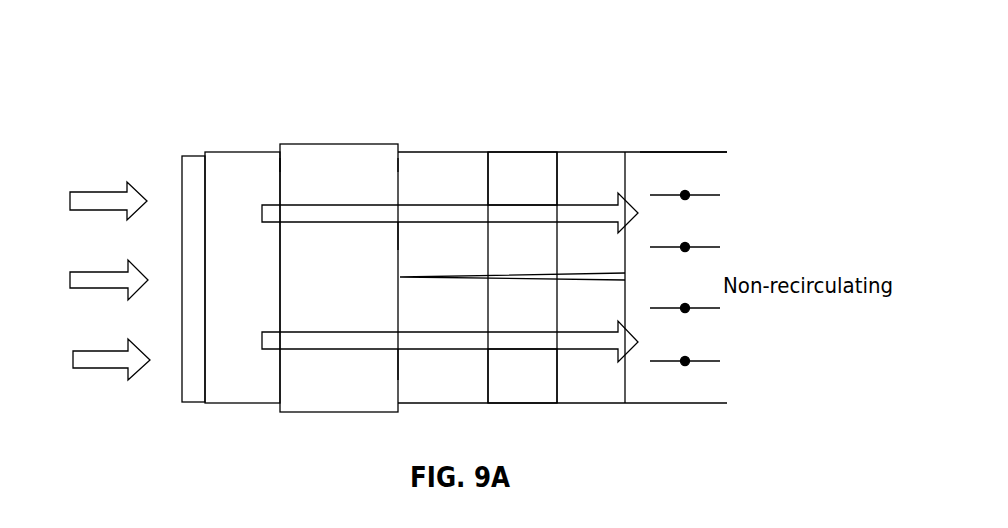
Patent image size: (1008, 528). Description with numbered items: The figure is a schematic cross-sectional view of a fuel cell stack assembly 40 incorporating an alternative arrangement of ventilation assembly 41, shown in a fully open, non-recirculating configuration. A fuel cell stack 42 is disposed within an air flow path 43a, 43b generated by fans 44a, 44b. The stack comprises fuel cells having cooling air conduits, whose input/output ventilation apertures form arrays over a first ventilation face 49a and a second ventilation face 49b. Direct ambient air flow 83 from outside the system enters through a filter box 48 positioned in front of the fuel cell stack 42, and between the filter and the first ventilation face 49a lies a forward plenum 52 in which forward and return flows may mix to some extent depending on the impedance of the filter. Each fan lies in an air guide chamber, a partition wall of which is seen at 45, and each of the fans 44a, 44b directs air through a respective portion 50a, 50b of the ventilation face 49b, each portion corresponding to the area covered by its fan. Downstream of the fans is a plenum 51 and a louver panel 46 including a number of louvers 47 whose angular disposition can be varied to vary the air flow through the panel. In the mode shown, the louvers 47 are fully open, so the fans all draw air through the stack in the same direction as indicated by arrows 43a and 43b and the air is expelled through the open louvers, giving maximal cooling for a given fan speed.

The fuel cell stack assembly 40 is at (123, 97).
The ventilation assembly 41 is at (592, 129).
The fuel cell stack 42 is at (330, 163).
The air flow path 43a is at (452, 214).
The air flow path 43b is at (452, 343).
The upper fan 44a is at (525, 180).
The lower fan 44b is at (528, 385).
The partition wall 45 is at (452, 280).
The louver panel 46 is at (713, 152).
The louvers 47 is at (708, 241).
The filter box 48 is at (192, 156).
The first ventilation face 49a is at (280, 170).
The second ventilation face 49b is at (398, 171).
The portion of ventilation face 50a is at (398, 237).
The portion of ventilation face 50b is at (400, 367).
The plenum 51 is at (680, 218).
The forward plenum 52 is at (258, 290).
The air flow 83 is at (82, 210).